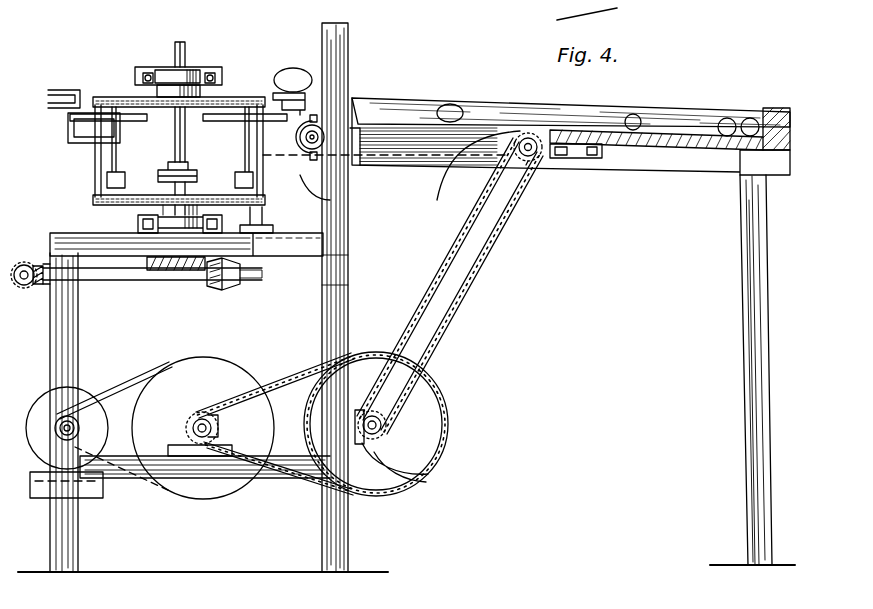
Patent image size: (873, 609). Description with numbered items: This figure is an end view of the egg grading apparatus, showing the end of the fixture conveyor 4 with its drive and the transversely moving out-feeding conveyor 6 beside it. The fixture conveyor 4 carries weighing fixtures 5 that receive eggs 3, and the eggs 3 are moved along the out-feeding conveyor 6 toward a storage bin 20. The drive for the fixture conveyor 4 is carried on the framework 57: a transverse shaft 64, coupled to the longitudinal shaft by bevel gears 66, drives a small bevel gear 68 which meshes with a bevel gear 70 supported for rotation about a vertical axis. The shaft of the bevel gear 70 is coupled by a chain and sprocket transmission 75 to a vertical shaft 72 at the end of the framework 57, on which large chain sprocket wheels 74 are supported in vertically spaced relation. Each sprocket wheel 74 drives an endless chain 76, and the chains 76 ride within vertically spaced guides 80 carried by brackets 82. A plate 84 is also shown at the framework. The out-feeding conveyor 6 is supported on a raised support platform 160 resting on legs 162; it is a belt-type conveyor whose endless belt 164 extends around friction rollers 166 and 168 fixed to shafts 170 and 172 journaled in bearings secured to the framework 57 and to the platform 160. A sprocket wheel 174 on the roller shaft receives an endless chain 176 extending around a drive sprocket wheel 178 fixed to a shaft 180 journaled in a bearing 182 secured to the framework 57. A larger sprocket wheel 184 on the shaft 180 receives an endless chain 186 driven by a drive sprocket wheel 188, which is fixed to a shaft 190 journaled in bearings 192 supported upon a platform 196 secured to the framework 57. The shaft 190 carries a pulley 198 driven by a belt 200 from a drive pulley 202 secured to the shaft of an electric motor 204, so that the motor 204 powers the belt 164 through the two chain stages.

The egg 3 is at (451, 105).
The fixture conveyor 4 is at (92, 164).
The weighing fixture 5 is at (57, 86).
The out-feeding conveyor 6 is at (492, 118).
The storage bin 20 is at (665, 110).
The framework 57 is at (323, 305).
The transverse shaft 64 is at (112, 280).
The bevel gears 66 is at (28, 264).
The small bevel gear 68 is at (212, 288).
The bevel gear 70 is at (157, 272).
The vertical shaft 72 is at (187, 144).
The large chain sprocket wheel 74 is at (160, 107).
The chain and sprocket transmission 75 is at (198, 176).
The endless chain 76 is at (99, 97).
The guide 80 is at (262, 207).
The bracket 82 is at (258, 70).
The plate 84 is at (295, 248).
The support platform 160 is at (672, 180).
The legs 162 is at (740, 369).
The endless belt 164 is at (395, 123).
The friction roller 166 is at (312, 150).
The friction roller 168 is at (442, 201).
The shaft 170 is at (306, 178).
The shaft 172 is at (515, 195).
The sprocket wheel 174 is at (542, 163).
The endless chain 176 is at (474, 283).
The drive sprocket wheel 178 is at (390, 420).
The shaft 180 is at (438, 470).
The bearing 182 is at (414, 486).
The larger sprocket wheel 184 is at (428, 437).
The endless chain 186 is at (298, 488).
The drive sprocket wheel 188 is at (268, 380).
The shaft 190 is at (203, 446).
The bearings 192 is at (176, 412).
The platform 196 is at (122, 482).
The pulley 198 is at (196, 354).
The belt 200 is at (132, 386).
The drive pulley 202 is at (65, 482).
The electric motor 204 is at (40, 402).